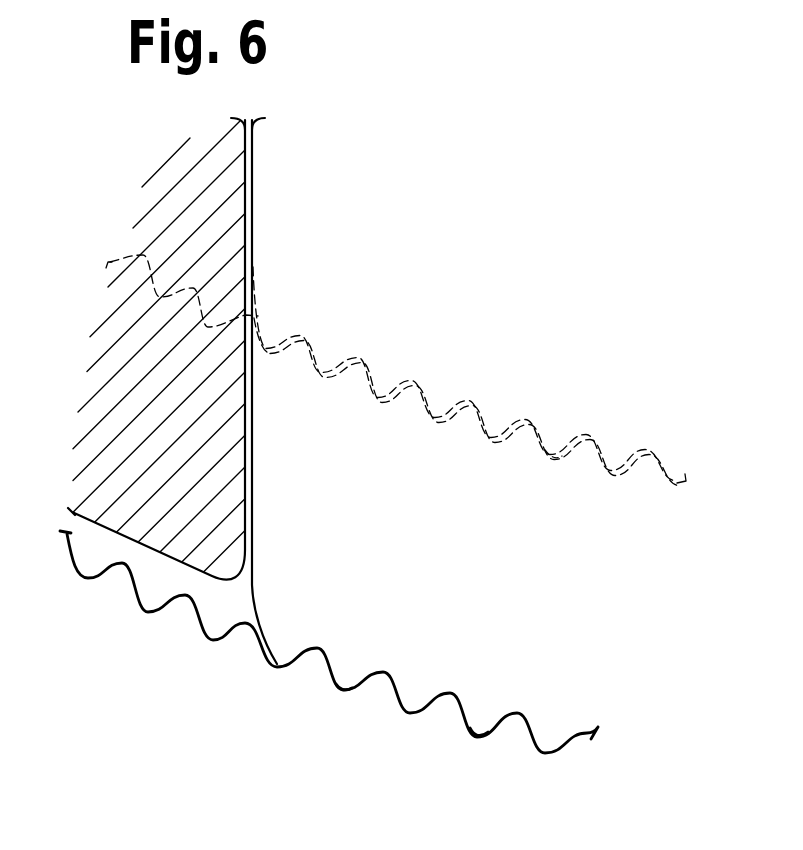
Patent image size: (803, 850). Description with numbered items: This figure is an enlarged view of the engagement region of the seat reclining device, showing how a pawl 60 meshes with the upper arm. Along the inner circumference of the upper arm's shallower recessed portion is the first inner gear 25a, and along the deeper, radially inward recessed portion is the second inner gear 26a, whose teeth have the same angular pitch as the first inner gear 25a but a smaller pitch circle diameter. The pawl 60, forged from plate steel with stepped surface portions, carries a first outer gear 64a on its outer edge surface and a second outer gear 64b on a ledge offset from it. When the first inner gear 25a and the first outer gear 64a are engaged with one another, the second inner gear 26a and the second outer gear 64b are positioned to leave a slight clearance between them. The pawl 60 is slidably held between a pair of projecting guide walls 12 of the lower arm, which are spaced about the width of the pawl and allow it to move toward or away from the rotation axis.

The guide wall 12 is at (251, 192).
The first inner gear 25a is at (332, 675).
The second inner gear 26a is at (493, 440).
The pawl 60 is at (487, 638).
The first outer gear 64a is at (357, 688).
The second outer gear 64b is at (552, 448).